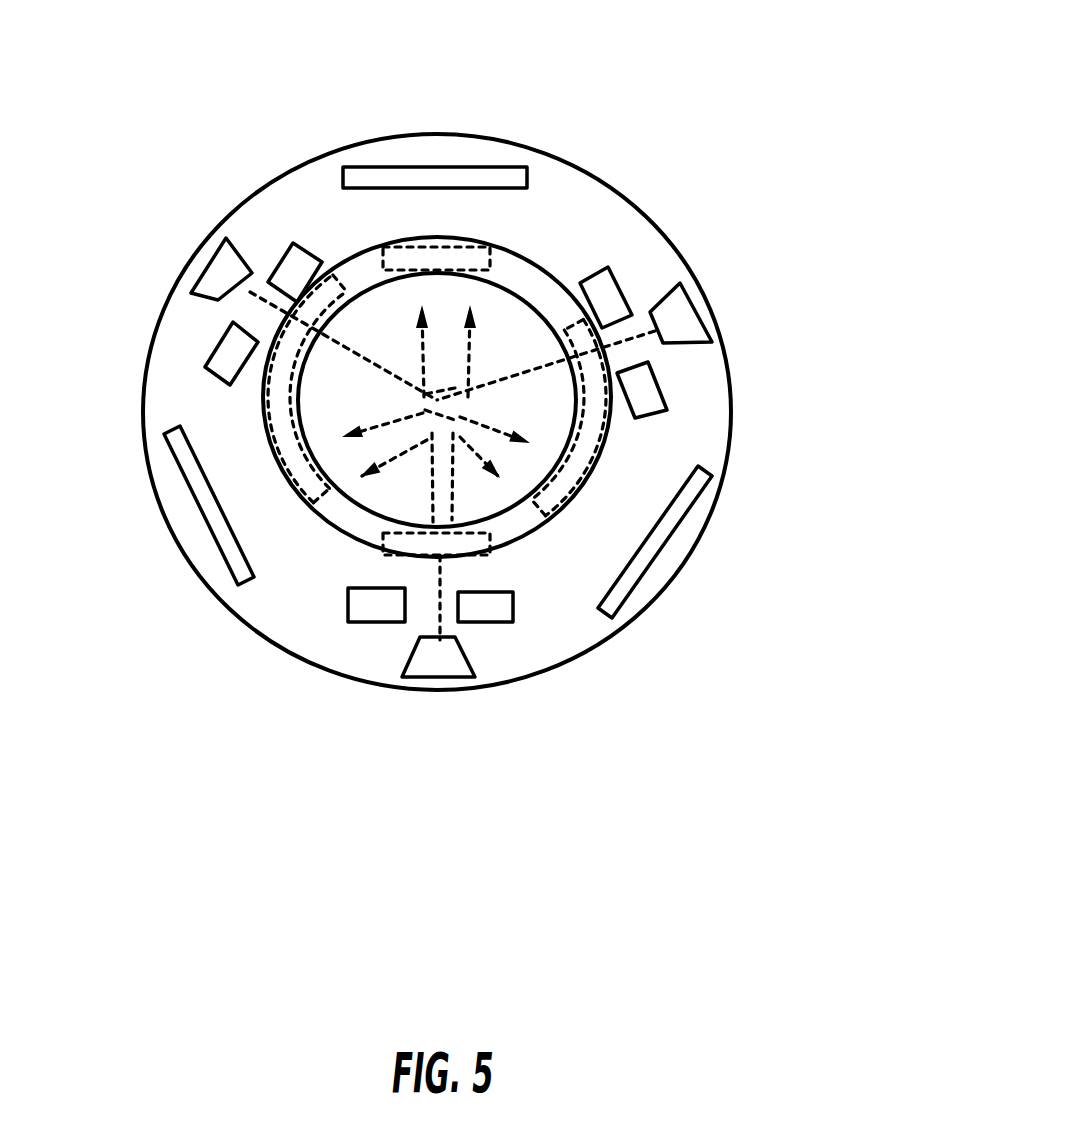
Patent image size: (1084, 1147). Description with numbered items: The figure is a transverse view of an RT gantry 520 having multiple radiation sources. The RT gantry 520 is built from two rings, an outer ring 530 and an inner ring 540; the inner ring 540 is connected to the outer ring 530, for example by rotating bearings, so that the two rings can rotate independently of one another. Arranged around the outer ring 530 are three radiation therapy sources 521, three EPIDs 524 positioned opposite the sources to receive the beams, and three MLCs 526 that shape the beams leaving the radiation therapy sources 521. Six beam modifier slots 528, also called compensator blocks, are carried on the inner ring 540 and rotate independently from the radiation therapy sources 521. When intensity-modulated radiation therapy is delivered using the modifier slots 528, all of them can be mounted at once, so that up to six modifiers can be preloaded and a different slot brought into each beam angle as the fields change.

The RT gantry 520 is at (502, 477).
The radiation therapy sources 521 is at (218, 255).
The EPIDs 524 is at (432, 167).
The MLCs 526 is at (625, 292).
The beam modifier slots 528 is at (487, 247).
The outer ring 530 is at (303, 182).
The inner ring 540 is at (340, 543).